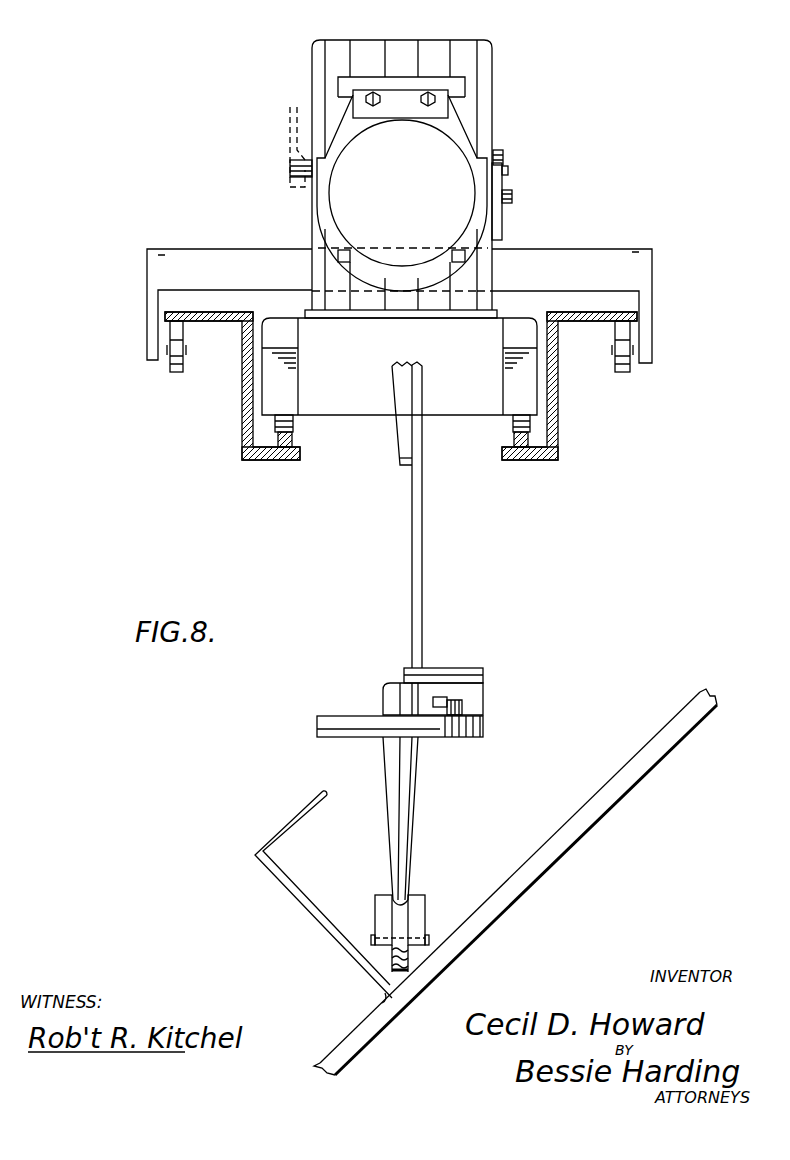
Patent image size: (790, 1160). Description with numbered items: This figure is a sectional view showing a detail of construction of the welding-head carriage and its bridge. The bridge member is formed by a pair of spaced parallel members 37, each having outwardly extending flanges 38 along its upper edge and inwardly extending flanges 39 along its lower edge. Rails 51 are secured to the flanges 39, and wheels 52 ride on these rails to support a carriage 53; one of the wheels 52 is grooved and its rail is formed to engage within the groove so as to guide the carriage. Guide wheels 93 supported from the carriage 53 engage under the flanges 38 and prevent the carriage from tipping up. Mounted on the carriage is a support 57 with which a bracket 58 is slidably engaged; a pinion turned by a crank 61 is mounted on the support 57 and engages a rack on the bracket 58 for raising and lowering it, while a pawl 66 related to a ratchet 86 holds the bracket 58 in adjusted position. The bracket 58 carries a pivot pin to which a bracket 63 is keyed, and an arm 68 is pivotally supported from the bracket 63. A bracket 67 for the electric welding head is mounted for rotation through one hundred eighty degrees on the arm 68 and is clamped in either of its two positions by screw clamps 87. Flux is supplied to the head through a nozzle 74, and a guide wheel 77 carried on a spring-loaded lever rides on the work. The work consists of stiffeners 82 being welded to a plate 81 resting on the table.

The spaced parallel members 37 is at (242, 396).
The outwardly extending flanges 38 is at (225, 322).
The inwardly extending flanges 39 is at (265, 462).
The rails 51 is at (296, 440).
The wheels 52 is at (295, 426).
The carriage 53 is at (331, 382).
The support 57 is at (318, 52).
The bracket 58 is at (457, 85).
The crank 61 is at (290, 131).
The bracket 63 is at (438, 110).
The pawl 66 is at (505, 196).
The bracket 67 is at (483, 675).
The arm 68 is at (421, 594).
The nozzle 74 is at (410, 796).
The guide wheel 77 is at (400, 925).
The plate 81 is at (593, 808).
The stiffeners 82 is at (288, 822).
The ratchet 86 is at (503, 160).
The screw clamps 87 is at (460, 710).
The guide wheels 93 is at (176, 372).